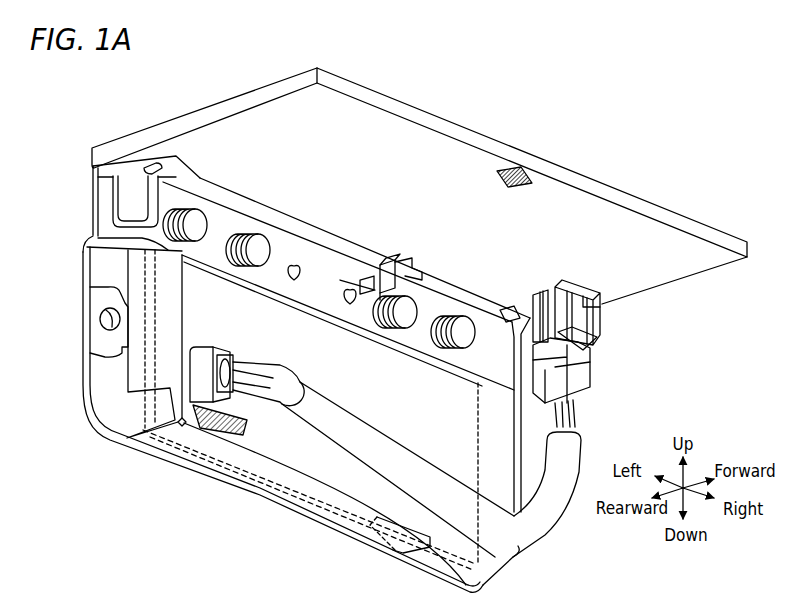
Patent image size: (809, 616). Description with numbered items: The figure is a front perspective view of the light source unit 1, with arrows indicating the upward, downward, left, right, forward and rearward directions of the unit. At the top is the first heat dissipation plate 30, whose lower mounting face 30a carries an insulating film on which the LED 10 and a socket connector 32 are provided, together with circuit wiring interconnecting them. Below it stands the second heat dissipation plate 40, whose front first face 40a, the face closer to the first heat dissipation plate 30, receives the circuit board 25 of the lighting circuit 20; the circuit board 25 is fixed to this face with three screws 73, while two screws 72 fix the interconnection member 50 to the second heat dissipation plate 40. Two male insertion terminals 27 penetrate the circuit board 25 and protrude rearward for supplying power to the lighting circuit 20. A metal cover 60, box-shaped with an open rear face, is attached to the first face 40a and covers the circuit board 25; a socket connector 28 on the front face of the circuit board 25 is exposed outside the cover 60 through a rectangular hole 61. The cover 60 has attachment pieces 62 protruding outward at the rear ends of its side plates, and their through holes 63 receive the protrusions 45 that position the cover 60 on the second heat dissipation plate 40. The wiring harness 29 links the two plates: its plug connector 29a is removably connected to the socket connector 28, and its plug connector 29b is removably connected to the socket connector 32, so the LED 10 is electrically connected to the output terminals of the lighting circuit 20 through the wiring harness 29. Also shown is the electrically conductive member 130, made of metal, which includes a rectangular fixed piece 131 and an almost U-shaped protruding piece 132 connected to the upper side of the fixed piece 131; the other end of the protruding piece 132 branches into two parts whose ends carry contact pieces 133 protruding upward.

The light source unit 1 is at (152, 470).
The LED 10 is at (525, 187).
The lighting circuit 20 is at (252, 485).
The circuit board 25 is at (320, 512).
The insertion terminals 27 is at (297, 283).
The socket connector 28 is at (208, 360).
The wiring harness 29 is at (553, 527).
The plug connector 29a is at (240, 363).
The plug connector 29b is at (592, 372).
The first heat dissipation plate 30 is at (687, 225).
The mounting face 30a is at (710, 257).
The socket connector 32 is at (590, 317).
The second heat dissipation plate 40 is at (98, 430).
The first face 40a is at (107, 393).
The protrusion 45 is at (101, 318).
The interconnection member 50 is at (98, 176).
The cover 60 is at (497, 567).
The rectangular hole 61 is at (243, 427).
The attachment piece 62 is at (102, 295).
The through holes 63 is at (102, 327).
The screws 72 is at (208, 220).
The screws 73 is at (262, 246).
The electrically conductive member 130 is at (368, 280).
The fixed piece 131 is at (374, 296).
The protruding piece 132 is at (380, 262).
The contact pieces 133 is at (418, 272).